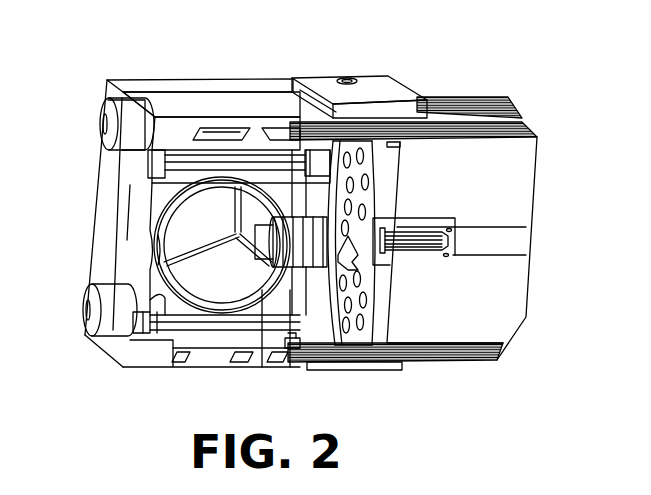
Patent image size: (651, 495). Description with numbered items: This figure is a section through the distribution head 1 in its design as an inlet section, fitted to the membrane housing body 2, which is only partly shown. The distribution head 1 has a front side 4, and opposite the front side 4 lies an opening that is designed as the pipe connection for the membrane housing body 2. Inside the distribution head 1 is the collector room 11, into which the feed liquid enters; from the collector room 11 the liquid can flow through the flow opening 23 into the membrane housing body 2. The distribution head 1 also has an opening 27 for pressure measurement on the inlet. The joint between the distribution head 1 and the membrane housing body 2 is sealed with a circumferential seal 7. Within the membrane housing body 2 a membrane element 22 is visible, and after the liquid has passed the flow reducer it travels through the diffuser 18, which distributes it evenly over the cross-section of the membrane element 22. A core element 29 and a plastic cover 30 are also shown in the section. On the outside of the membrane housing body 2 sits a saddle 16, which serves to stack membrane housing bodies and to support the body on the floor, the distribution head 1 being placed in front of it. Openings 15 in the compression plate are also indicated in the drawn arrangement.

The distribution head 1 is at (213, 82).
The membrane housing body 2 is at (495, 100).
The front side 4 is at (130, 213).
The circumferential seal 7 is at (288, 340).
The collector room 11 is at (240, 283).
The openings in compression plate 15 is at (327, 264).
The saddle 16 is at (327, 78).
The diffuser 18 is at (358, 152).
The membrane element 22 is at (507, 172).
The flow opening to membrane housing body 23 is at (263, 296).
The opening for pressure measurement in the inlet 27 is at (182, 327).
The core element 29 is at (178, 183).
The plastic cover 30 is at (173, 292).